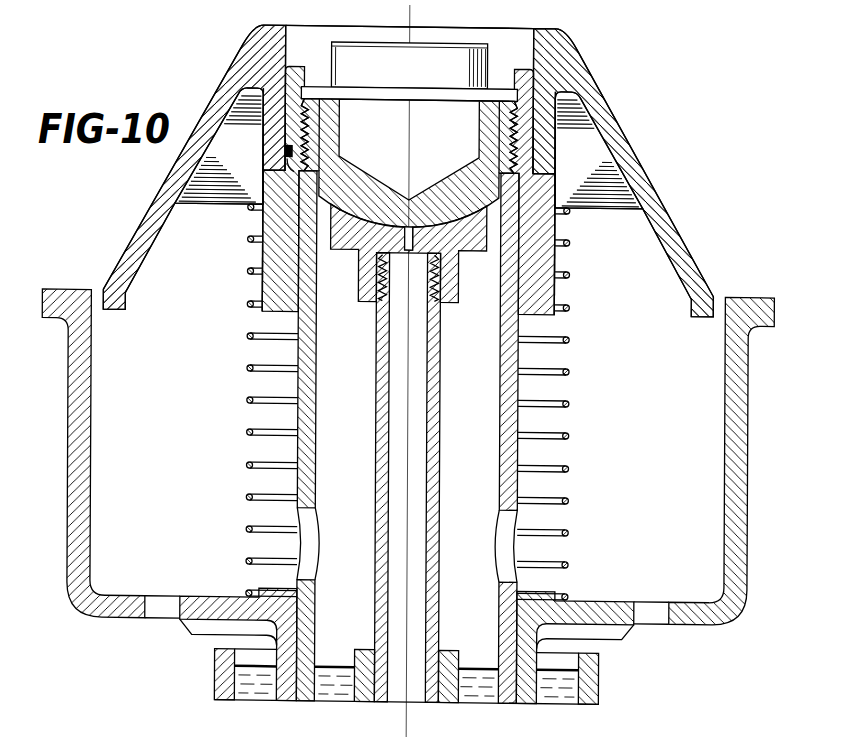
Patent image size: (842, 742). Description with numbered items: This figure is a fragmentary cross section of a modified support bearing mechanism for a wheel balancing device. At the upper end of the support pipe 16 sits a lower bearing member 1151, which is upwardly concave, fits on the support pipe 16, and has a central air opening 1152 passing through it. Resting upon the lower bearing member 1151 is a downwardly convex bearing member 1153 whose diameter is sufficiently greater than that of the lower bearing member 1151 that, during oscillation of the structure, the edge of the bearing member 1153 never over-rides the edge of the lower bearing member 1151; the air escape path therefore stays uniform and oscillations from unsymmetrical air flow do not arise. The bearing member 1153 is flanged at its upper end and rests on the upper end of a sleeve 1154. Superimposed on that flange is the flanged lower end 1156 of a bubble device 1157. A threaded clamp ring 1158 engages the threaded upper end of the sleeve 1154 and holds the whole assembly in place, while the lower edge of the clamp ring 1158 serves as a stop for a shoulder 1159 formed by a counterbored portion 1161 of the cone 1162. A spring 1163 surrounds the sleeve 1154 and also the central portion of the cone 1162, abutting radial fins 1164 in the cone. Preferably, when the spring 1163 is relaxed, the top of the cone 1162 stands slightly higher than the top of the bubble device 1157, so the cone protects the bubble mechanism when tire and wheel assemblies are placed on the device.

The support pipe 16 is at (436, 435).
The lower bearing member 1151 is at (488, 243).
The central air opening 1152 is at (410, 252).
The downwardly convex bearing member 1153 is at (494, 189).
The sleeve 1154 is at (300, 433).
The flanged lower end 1156 is at (505, 88).
The bubble device 1157 is at (483, 45).
The threaded clamp ring 1158 is at (535, 108).
The shoulder 1159 is at (278, 181).
The counterbored portion 1161 is at (282, 154).
The cone 1162 is at (241, 68).
The spring 1163 is at (250, 367).
The radial fins 1164 is at (193, 202).